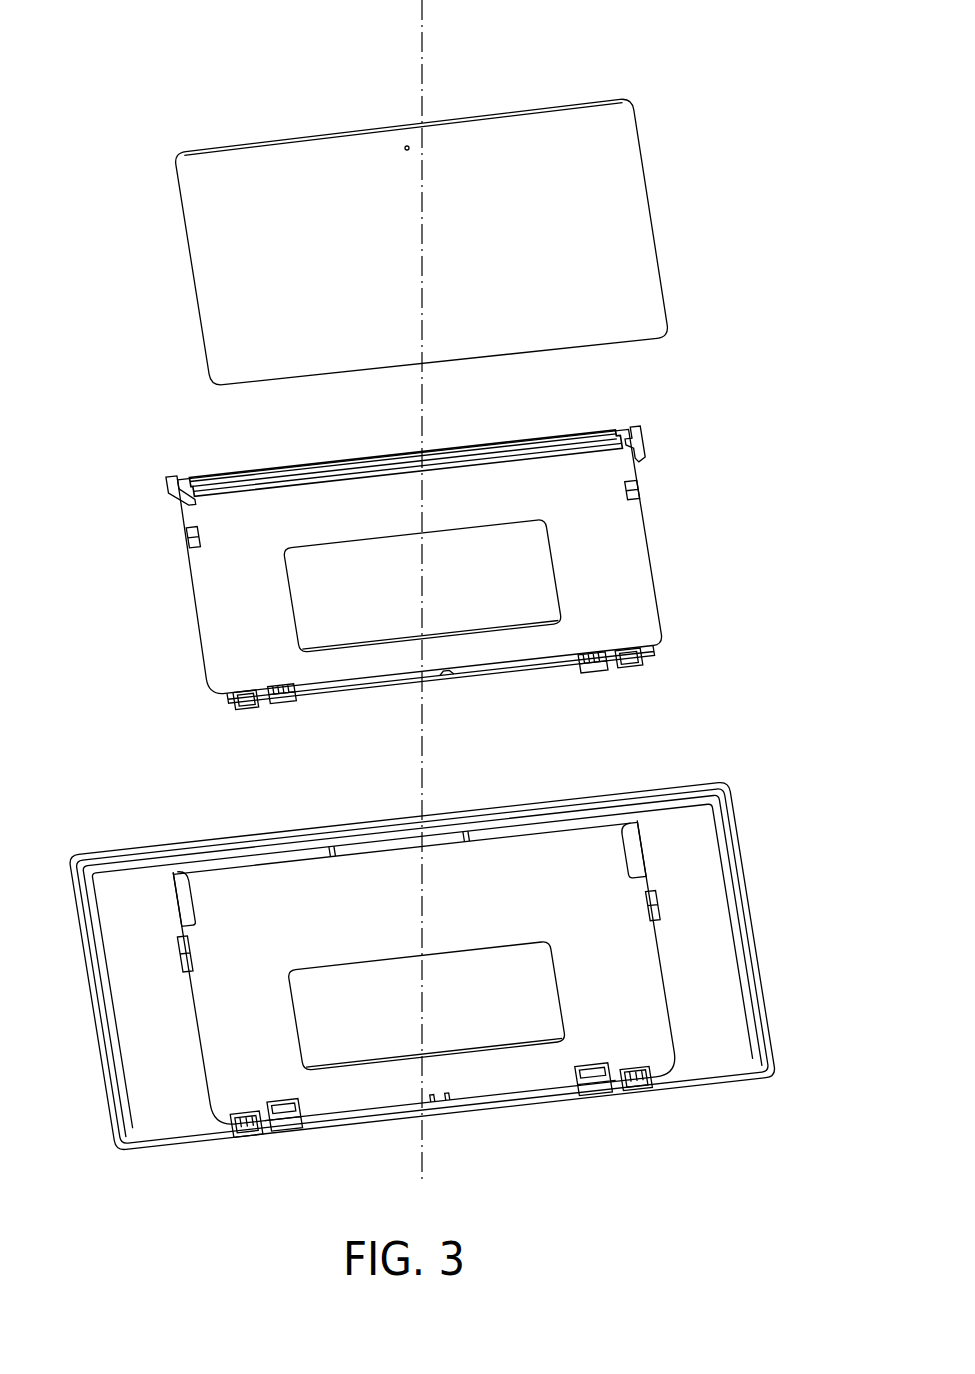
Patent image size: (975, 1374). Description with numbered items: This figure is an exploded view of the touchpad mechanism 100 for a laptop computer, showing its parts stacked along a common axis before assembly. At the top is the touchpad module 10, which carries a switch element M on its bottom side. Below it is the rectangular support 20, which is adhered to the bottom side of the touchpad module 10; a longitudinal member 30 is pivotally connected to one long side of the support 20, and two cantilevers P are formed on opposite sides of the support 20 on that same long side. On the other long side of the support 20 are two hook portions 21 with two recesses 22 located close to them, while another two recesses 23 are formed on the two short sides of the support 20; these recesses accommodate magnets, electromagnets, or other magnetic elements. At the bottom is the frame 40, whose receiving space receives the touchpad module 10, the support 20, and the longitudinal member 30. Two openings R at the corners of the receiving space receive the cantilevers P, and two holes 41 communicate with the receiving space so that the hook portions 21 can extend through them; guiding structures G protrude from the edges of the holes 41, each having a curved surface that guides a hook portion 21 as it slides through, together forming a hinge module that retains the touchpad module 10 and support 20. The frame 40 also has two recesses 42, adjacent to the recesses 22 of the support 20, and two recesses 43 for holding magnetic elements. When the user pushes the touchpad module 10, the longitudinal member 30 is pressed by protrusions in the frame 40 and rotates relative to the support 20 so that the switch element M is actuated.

The touchpad mechanism 100 is at (72, 33).
The touchpad module 10 is at (207, 144).
The switch element M is at (406, 144).
The longitudinal member 30 is at (598, 432).
The support 20 is at (655, 571).
The cantilever P is at (645, 438).
The recess 23 is at (645, 490).
The recess 22 is at (632, 668).
The hook portion 21 is at (603, 672).
The frame 40 is at (740, 830).
The opening R is at (630, 850).
The recess 43 is at (175, 958).
The recess 42 is at (246, 1140).
The hole 41 is at (296, 1130).
The guiding structure G is at (287, 1130).